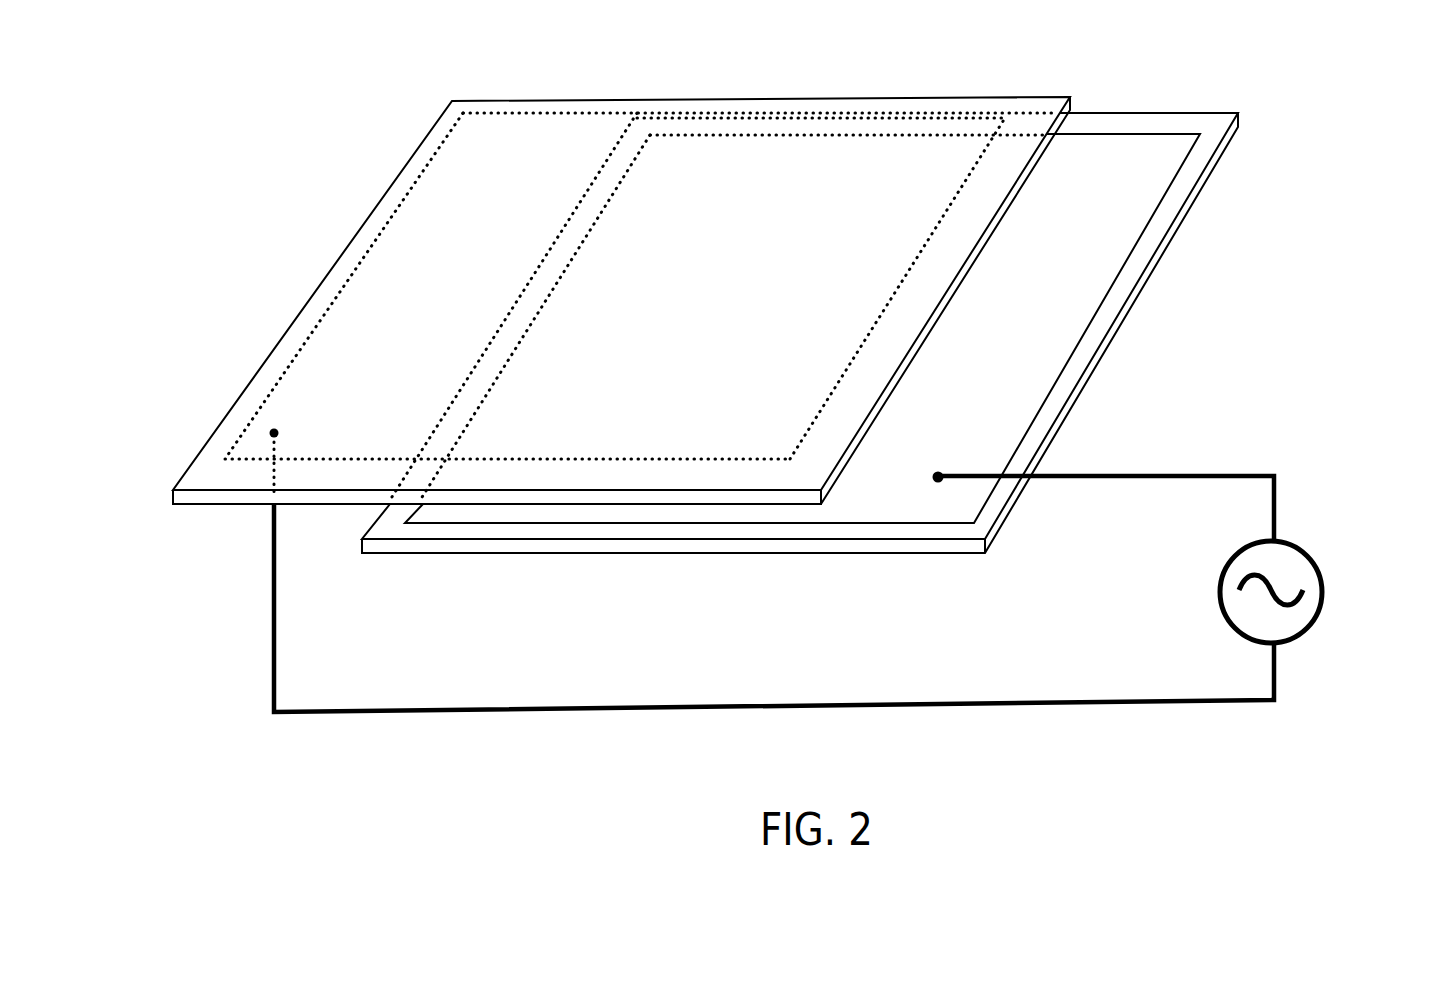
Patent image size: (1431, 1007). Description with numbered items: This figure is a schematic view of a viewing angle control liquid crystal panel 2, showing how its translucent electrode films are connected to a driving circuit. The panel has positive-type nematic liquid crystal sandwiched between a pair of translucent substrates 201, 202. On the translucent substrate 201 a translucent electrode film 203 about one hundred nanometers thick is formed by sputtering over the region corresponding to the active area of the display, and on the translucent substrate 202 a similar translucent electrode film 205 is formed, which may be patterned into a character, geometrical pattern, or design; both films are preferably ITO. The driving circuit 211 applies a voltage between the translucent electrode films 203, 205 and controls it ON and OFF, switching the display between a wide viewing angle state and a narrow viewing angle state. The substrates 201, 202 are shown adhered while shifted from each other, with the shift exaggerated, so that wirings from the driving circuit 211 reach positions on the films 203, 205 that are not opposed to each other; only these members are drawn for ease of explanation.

The viewing angle control liquid crystal panel 2 is at (1272, 83).
The translucent substrate 201 is at (335, 252).
The translucent substrate 202 is at (1113, 336).
The translucent electrode film 203 is at (338, 373).
The translucent electrode film 205 is at (1090, 288).
The driving circuit 211 is at (1310, 567).